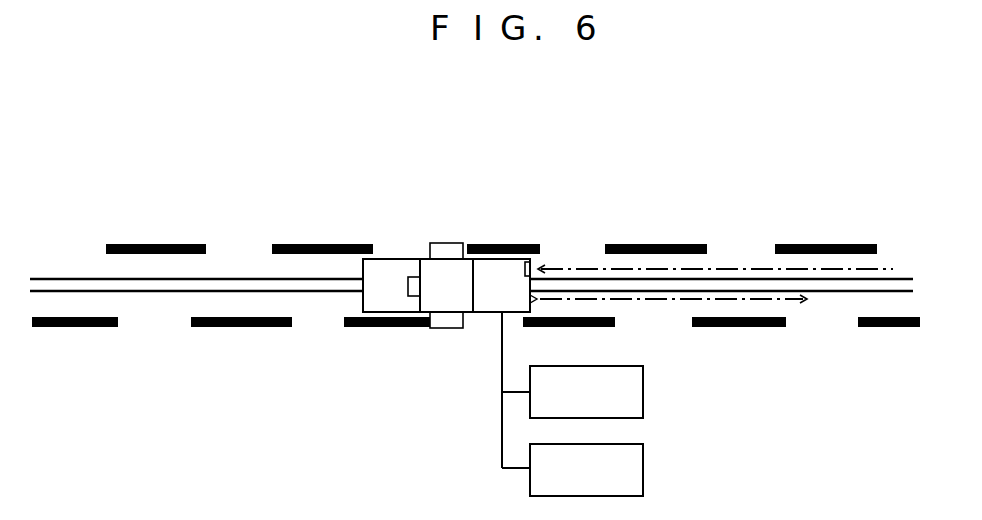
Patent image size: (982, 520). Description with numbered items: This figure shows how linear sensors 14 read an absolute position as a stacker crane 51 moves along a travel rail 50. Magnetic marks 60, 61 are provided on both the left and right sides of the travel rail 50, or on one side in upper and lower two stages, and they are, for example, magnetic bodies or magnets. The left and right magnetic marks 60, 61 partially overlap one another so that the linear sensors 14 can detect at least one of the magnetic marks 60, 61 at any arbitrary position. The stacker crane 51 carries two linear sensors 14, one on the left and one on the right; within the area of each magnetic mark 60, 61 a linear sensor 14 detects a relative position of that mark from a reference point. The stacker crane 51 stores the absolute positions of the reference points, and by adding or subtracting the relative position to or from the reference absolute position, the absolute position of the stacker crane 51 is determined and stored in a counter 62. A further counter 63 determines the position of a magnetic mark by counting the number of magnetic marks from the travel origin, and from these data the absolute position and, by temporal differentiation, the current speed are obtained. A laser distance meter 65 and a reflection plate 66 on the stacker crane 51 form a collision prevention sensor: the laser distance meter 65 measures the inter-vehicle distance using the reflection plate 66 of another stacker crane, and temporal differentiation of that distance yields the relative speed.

The linear sensor 14 is at (447, 243).
The travel rail 50 is at (723, 285).
The stacker crane 51 is at (380, 295).
The magnetic mark 60 is at (157, 244).
The magnetic mark 61 is at (72, 328).
The counter 62 is at (643, 392).
The counter 63 is at (643, 467).
The laser distance meter 65 is at (533, 303).
The reflection plate 66 is at (534, 268).